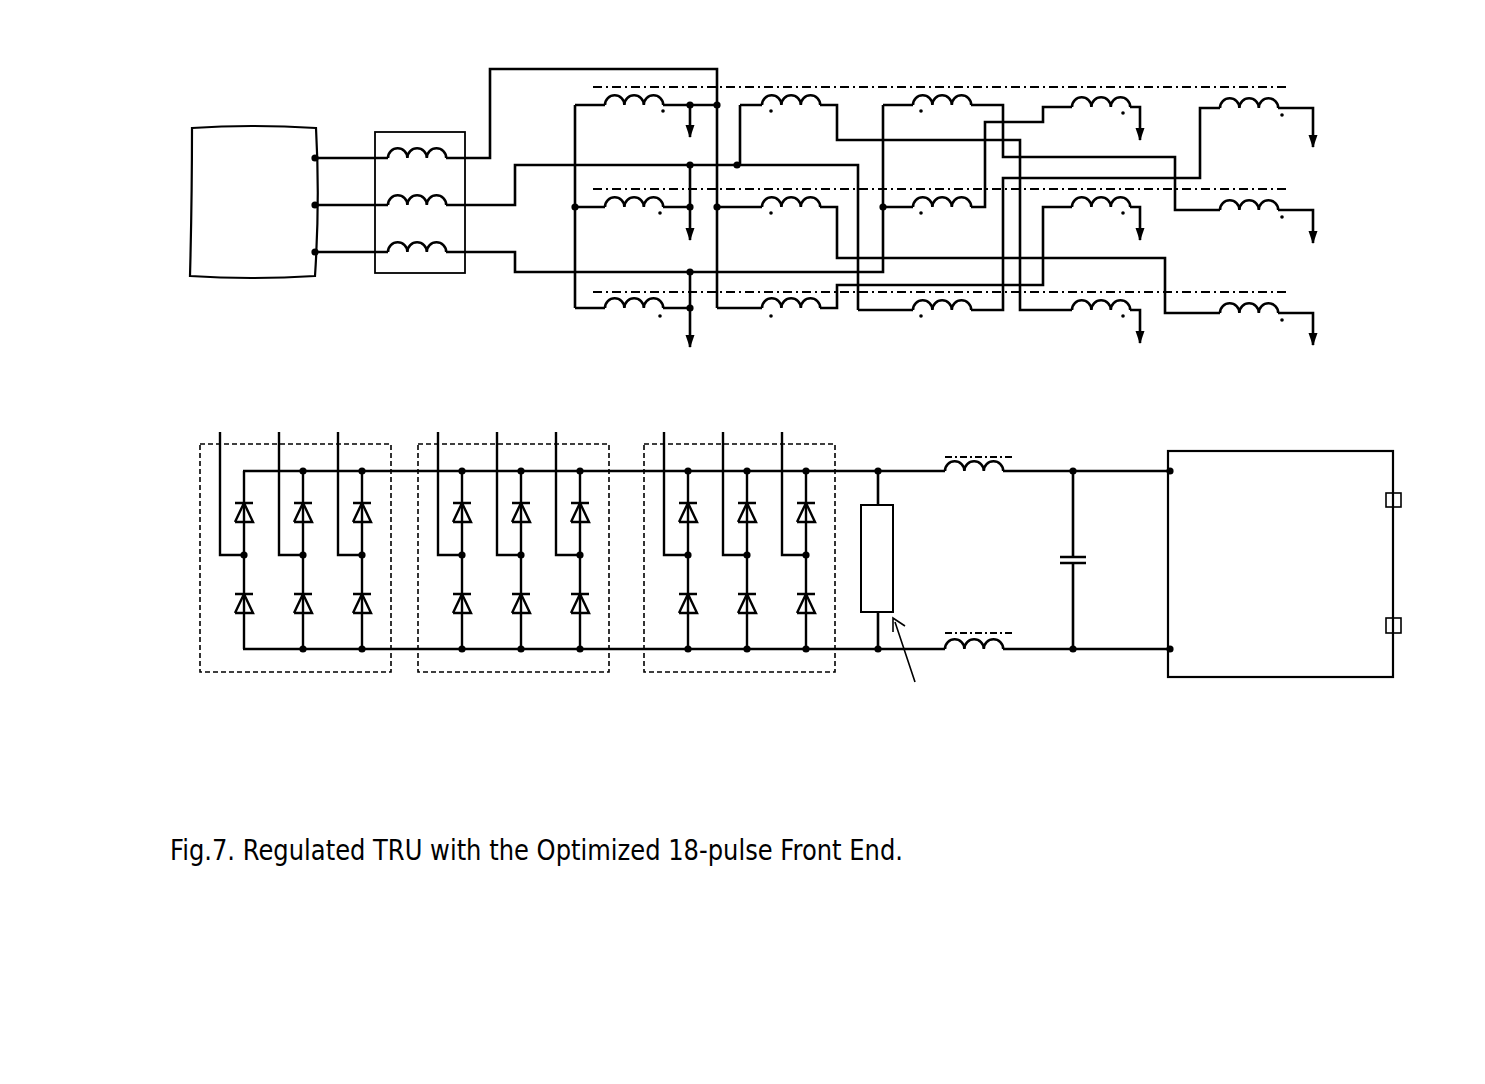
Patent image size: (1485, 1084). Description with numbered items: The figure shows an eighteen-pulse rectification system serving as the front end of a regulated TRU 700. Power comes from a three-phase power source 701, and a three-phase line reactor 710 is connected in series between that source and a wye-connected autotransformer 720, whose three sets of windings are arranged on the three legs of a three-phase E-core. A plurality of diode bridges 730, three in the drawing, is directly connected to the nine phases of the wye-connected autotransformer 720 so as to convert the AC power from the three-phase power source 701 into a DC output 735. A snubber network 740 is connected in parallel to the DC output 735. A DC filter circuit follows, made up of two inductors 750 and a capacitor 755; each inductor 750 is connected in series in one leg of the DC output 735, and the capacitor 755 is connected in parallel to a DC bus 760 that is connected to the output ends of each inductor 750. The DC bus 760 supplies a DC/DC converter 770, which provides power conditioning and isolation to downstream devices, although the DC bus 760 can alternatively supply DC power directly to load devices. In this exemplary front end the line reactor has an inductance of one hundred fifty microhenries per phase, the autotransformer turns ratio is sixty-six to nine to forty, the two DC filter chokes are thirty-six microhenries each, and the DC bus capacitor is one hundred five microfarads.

The regulated TRU 700 is at (360, 802).
The three-phase power source 701 is at (246, 292).
The three-phase line reactor 710 is at (412, 117).
The wye-connected autotransformer 720 is at (1022, 72).
The diode bridges 730 is at (378, 442).
The DC output 735 is at (894, 442).
The snubber network 740 is at (895, 546).
The inductors 750 is at (1005, 477).
The capacitor 755 is at (1082, 566).
The DC bus 760 is at (1160, 456).
The DC/DC converter 770 is at (1285, 680).